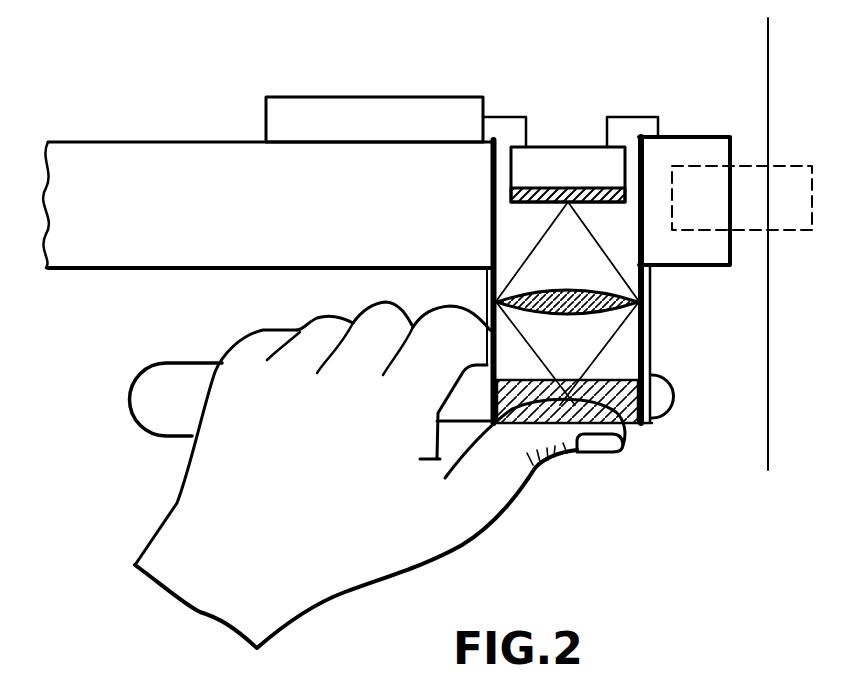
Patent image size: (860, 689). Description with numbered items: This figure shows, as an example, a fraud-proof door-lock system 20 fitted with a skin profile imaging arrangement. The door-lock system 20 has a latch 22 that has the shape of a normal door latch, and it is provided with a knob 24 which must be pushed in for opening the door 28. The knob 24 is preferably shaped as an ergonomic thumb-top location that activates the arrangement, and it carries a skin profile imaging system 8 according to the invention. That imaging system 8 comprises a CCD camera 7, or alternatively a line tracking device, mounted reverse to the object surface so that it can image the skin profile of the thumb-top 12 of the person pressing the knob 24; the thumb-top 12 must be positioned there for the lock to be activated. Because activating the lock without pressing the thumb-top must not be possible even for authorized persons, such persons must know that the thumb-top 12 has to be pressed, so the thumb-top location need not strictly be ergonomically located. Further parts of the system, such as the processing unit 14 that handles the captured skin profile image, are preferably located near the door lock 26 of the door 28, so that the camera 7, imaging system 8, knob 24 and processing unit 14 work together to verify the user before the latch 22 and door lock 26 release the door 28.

The CCD camera 7 is at (570, 195).
The skin profile imaging system 8 is at (593, 332).
The thumb-top 12 is at (563, 446).
The processing unit 14 is at (312, 105).
The door-lock system 20 is at (612, 487).
The latch 22 is at (155, 410).
The knob 24 is at (627, 417).
The door lock 26 is at (677, 148).
The door 28 is at (195, 162).